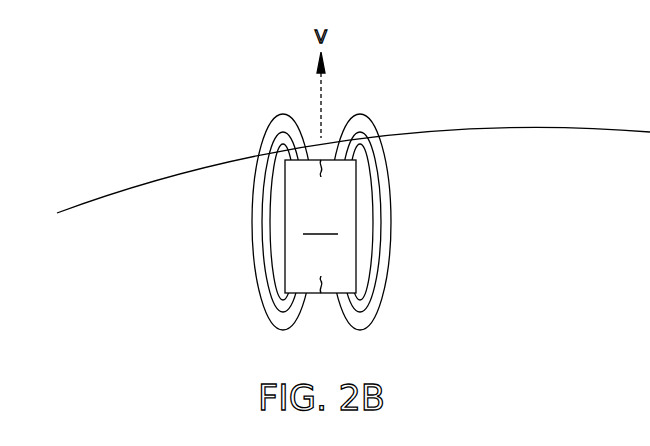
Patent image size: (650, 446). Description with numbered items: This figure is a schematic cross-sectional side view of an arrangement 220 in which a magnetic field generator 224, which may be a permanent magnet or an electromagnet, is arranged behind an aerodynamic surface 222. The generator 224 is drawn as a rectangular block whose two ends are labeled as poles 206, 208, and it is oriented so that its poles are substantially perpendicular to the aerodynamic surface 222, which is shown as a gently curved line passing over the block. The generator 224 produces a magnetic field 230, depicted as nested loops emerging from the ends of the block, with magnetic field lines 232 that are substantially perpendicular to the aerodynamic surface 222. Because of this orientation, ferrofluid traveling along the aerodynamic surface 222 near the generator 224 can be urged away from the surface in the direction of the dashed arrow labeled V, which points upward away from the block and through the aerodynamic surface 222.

The sensor assembly 220 is at (349, 138).
The aerodynamic surface 222 is at (353, 162).
The magnetic field 230 is at (369, 113).
The magnetic field lines 232 is at (394, 186).
The pole 206 is at (320, 182).
The magnetic field generator 224 is at (320, 221).
The pole 208 is at (320, 268).